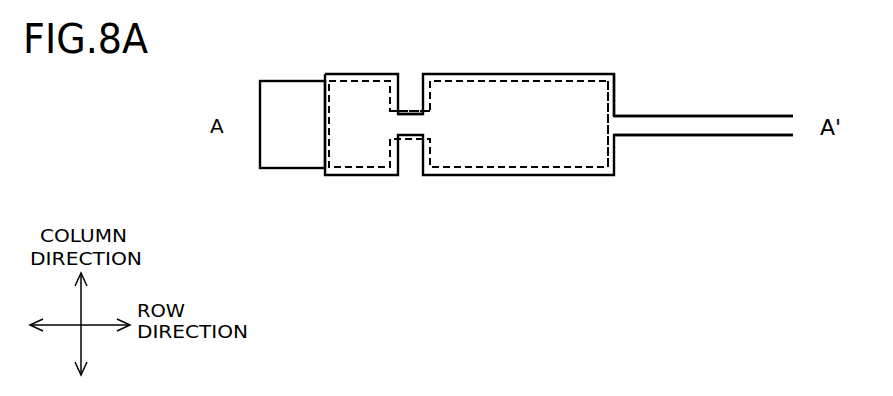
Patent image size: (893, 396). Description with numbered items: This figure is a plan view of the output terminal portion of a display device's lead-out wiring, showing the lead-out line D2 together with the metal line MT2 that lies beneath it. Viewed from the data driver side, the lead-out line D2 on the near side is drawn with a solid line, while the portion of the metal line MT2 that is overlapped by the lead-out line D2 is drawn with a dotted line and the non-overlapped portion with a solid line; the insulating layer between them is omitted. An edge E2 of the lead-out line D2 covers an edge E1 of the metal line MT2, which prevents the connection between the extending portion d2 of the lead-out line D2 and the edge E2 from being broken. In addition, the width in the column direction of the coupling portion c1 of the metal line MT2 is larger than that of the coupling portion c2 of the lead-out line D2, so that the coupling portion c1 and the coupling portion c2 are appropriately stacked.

The lead-out line D2 is at (392, 175).
The extending portion d2 is at (723, 128).
The metal line MT2 is at (475, 168).
The coupling portion c1 is at (412, 110).
The coupling portion c2 is at (403, 110).
The edge E1 is at (608, 93).
The edge E2 is at (615, 104).